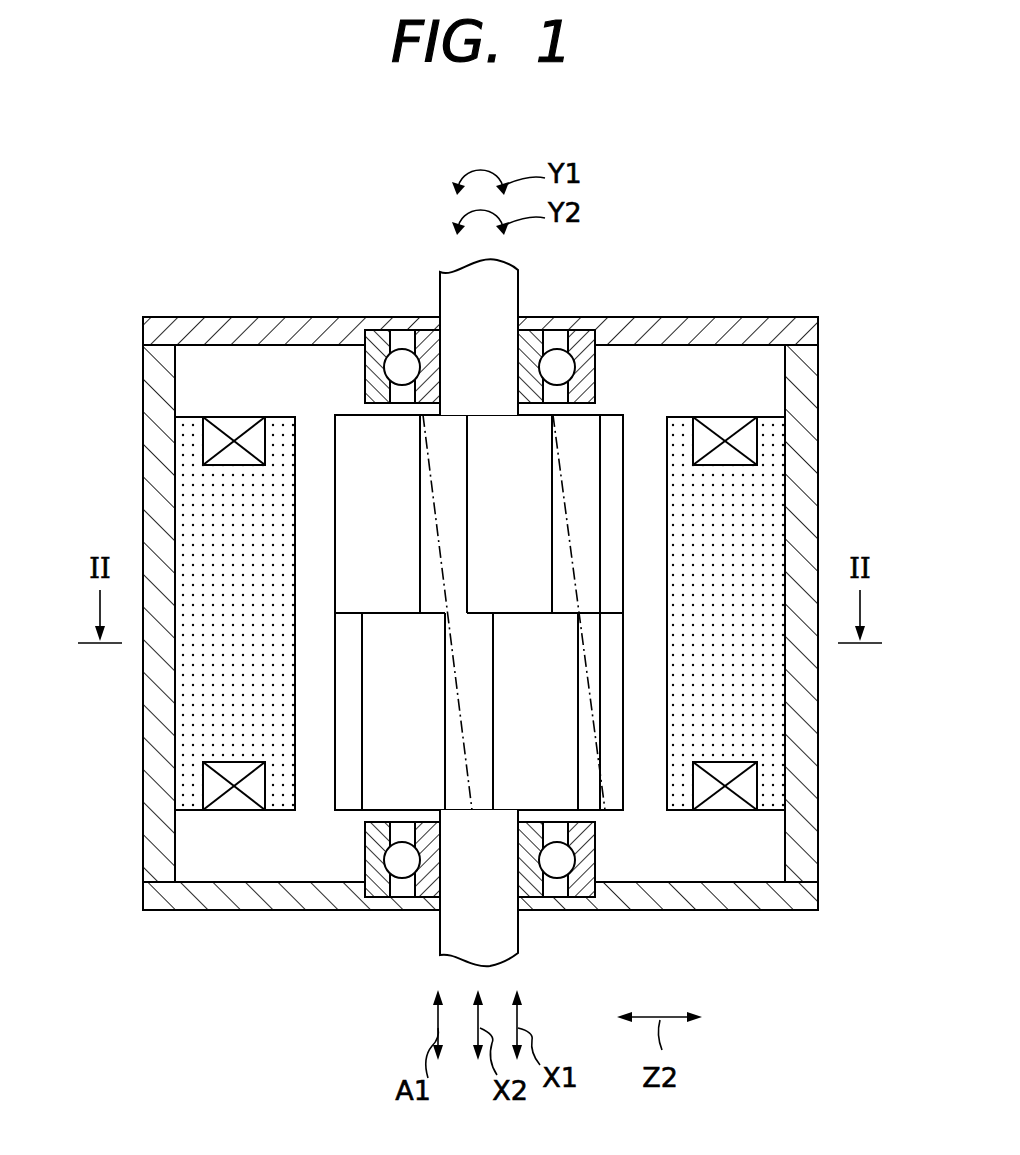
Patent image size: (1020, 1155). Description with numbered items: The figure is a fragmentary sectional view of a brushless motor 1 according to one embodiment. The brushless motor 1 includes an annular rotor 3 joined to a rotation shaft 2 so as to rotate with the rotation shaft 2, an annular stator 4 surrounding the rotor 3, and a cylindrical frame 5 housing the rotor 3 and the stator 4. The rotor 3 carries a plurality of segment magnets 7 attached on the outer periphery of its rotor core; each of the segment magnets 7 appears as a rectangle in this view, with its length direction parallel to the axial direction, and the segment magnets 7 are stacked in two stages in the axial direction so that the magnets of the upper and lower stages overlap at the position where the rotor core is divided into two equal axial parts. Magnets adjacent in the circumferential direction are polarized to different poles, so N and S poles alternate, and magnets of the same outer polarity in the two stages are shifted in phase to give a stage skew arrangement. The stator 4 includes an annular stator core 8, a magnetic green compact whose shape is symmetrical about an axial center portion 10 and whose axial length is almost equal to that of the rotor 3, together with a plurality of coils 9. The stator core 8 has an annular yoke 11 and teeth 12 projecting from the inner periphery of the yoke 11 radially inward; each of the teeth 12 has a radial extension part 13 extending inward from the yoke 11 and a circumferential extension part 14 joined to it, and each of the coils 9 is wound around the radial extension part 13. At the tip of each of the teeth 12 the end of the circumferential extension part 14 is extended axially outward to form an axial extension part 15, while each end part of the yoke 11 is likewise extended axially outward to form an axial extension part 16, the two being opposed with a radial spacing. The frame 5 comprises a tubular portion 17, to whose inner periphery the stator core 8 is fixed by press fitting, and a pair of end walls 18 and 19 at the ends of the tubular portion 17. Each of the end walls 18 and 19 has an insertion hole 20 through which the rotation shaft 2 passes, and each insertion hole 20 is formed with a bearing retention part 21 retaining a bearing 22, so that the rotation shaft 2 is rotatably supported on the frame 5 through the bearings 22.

The brushless motor 1 is at (190, 210).
The rotation shaft 2 is at (507, 300).
The rotor 3 is at (622, 402).
The stator 4 is at (800, 452).
The frame 5 is at (832, 794).
The segment magnets 7 is at (477, 450).
The stator core 8 is at (800, 506).
The coils 9 is at (243, 432).
The axial center portion 10 is at (724, 612).
The yoke 11 is at (184, 517).
The teeth 12 is at (97, 668).
The radial extension part 13 is at (208, 700).
The circumferential extension part 14 is at (277, 742).
The axial extension part 15 is at (282, 425).
The axial extension part 16 is at (190, 425).
The tubular portion 17 is at (805, 843).
The end wall 18 is at (703, 900).
The end wall 19 is at (712, 333).
The insertion hole 20 is at (574, 320).
The bearing retention part 21 is at (594, 339).
The bearing 22 is at (405, 362).